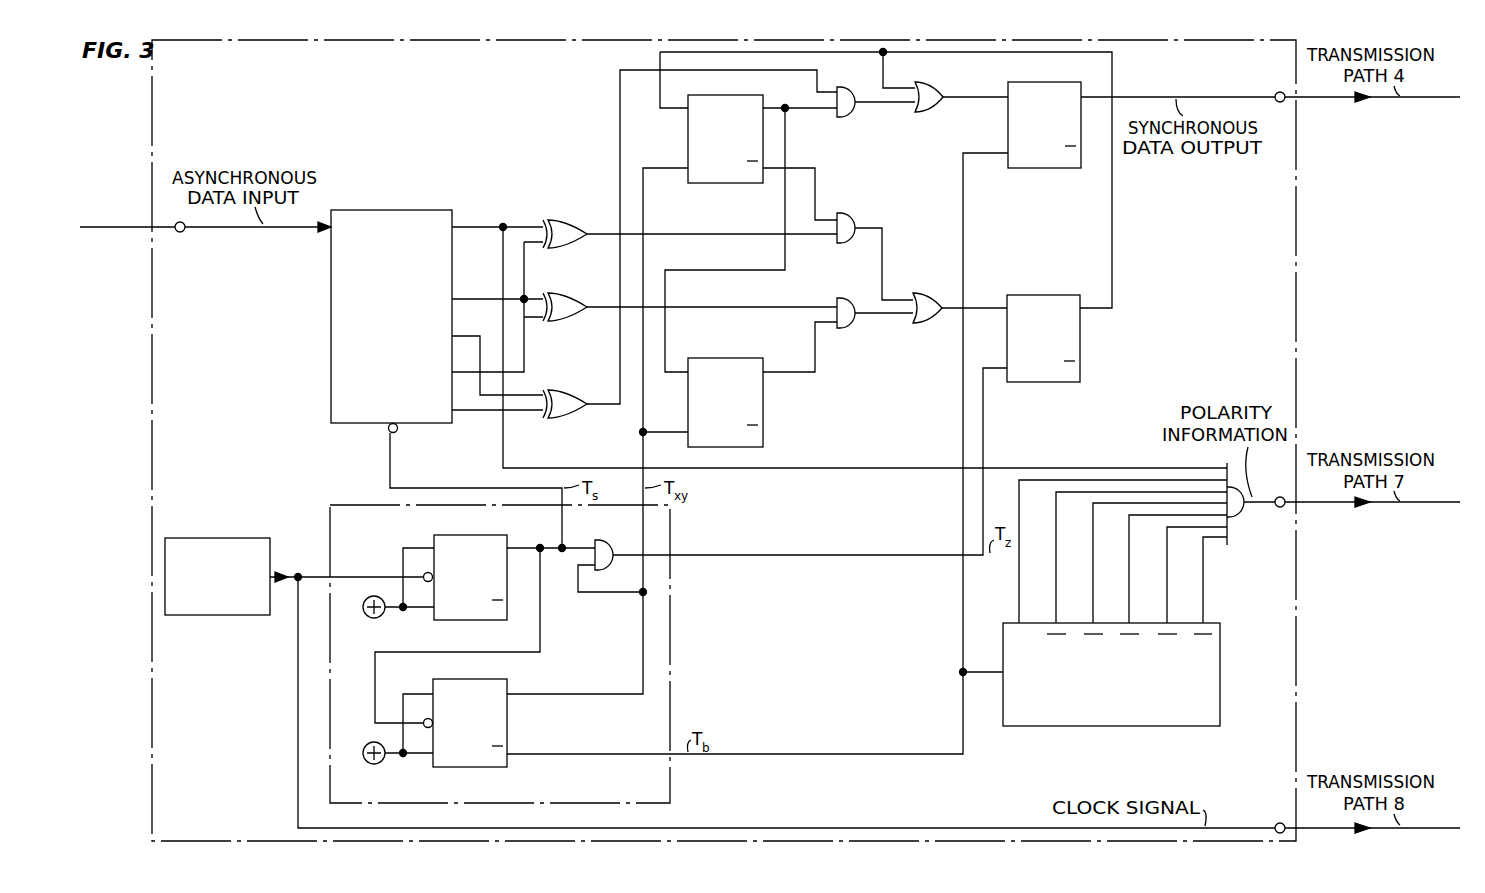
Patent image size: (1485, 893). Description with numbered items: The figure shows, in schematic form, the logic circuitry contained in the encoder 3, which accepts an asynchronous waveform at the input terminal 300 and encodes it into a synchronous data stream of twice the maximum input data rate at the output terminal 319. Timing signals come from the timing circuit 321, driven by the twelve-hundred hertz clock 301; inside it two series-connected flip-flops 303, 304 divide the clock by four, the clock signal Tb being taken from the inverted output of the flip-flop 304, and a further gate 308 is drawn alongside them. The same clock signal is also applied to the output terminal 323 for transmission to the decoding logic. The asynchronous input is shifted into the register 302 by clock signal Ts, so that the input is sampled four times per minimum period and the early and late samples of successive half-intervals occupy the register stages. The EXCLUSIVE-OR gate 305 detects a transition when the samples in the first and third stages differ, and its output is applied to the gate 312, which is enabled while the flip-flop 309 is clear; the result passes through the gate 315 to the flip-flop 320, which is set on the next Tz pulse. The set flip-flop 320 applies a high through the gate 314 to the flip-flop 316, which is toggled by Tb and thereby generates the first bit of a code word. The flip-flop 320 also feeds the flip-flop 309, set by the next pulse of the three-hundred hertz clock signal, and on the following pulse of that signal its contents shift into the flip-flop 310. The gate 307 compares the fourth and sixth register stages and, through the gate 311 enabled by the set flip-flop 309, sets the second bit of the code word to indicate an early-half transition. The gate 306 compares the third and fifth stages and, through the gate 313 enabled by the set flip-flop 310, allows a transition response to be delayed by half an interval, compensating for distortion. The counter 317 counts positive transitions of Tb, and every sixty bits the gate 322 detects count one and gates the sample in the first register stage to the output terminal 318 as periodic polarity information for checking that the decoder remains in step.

The encoder 3 is at (152, 118).
The input terminal 300 is at (183, 232).
The clock 301 is at (209, 538).
The register 302 is at (416, 212).
The flip-flop 303 is at (462, 534).
The flip-flop 304 is at (467, 678).
The EXCLUSIVE-OR gate 305 is at (573, 222).
The gate 306 is at (573, 297).
The gate 307 is at (573, 392).
The AND gate 308 is at (602, 530).
The flip-flop 309 is at (729, 183).
The flip-flop 310 is at (730, 358).
The gate 311 is at (851, 115).
The gate 312 is at (843, 213).
The gate 313 is at (847, 328).
The gate 314 is at (935, 92).
The gate 315 is at (925, 298).
The flip-flop 316 is at (1048, 168).
The counter 317 is at (1147, 727).
The output terminal 318 is at (1280, 507).
The output terminal 319 is at (1276, 92).
The flip-flop 320 is at (1053, 295).
The timing circuit 321 is at (670, 598).
The gate 322 is at (1237, 517).
The output terminal 323 is at (1276, 823).